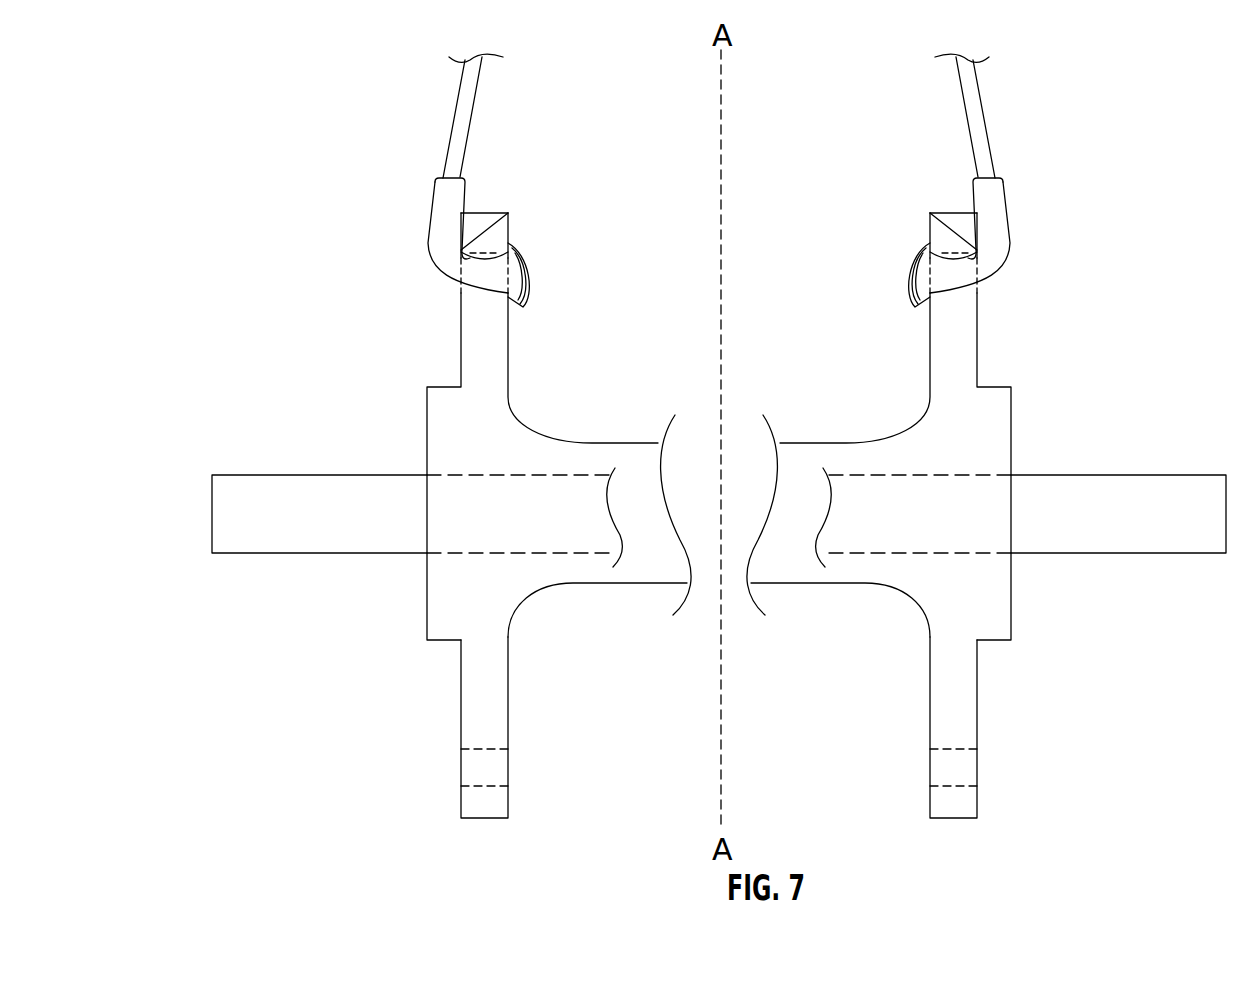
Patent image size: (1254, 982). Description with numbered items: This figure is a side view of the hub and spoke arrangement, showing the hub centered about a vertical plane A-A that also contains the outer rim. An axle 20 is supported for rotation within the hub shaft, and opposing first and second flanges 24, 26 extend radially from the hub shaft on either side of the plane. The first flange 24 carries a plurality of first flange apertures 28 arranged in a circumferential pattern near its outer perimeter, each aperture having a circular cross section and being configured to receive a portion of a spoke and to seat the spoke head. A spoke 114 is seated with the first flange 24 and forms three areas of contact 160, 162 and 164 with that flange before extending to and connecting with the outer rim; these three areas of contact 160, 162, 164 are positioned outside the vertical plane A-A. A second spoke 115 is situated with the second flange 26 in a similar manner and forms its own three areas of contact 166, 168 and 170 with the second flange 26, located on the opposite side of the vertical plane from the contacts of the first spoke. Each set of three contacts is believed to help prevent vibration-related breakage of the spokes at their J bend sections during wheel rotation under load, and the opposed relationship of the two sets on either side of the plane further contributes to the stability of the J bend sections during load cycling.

The axle 20 is at (286, 553).
The first flange 24 is at (508, 348).
The second flange 26 is at (978, 348).
The first flange apertures 28 is at (505, 768).
The spoke 114 is at (477, 93).
The second spoke 115 is at (980, 93).
The area of contact 160 is at (513, 243).
The area of contact 162 is at (462, 250).
The area of contact 164 is at (462, 213).
The area of contact 166 is at (925, 245).
The area of contact 168 is at (930, 213).
The area of contact 170 is at (977, 250).